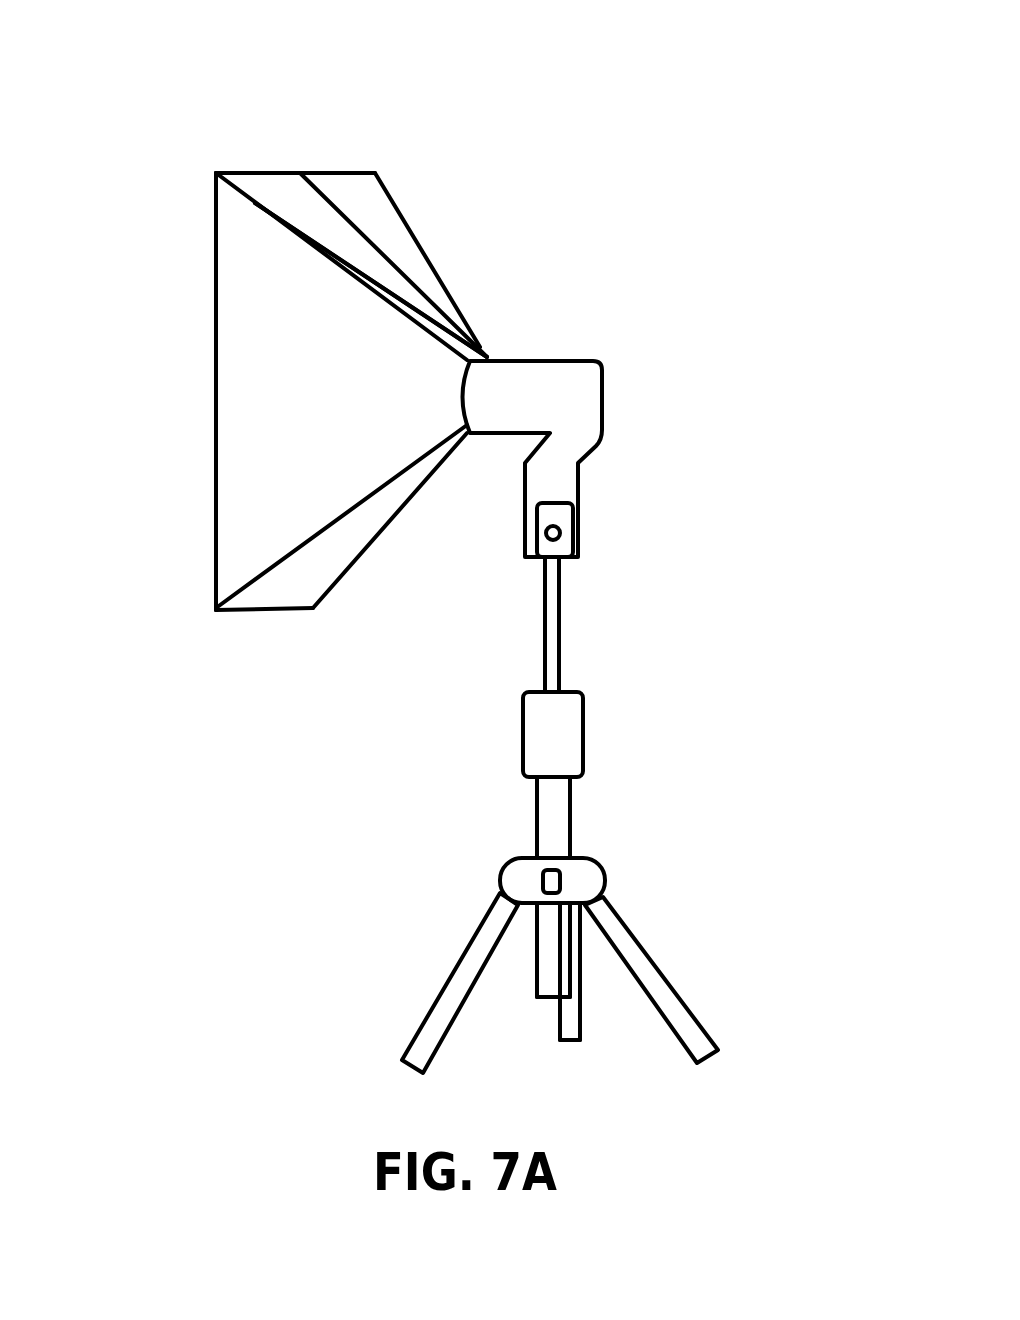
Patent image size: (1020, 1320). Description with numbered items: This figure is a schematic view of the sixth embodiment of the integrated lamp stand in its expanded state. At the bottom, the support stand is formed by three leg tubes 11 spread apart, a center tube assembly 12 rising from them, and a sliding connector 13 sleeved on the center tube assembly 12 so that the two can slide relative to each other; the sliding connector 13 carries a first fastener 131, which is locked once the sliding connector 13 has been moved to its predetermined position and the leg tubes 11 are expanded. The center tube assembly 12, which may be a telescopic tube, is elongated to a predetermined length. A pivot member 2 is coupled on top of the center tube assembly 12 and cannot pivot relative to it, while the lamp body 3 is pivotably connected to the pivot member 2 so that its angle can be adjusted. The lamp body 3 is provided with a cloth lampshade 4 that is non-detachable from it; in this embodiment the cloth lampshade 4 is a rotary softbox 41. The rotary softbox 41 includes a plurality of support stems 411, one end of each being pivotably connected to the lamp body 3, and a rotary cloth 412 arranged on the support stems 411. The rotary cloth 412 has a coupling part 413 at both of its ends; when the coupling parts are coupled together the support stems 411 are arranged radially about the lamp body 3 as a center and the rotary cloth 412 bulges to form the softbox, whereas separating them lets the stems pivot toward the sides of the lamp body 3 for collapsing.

The cloth lampshade 4 is at (238, 655).
The rotary softbox 41 is at (168, 142).
The support stems 411 is at (255, 203).
The rotary cloth 412 is at (216, 314).
The coupling part 413 is at (397, 273).
The lamp body 3 is at (602, 410).
The pivot member 2 is at (573, 533).
The center tube assembly 12 is at (570, 802).
The sliding connector 13 is at (500, 878).
The first fastener 131 is at (560, 883).
The leg tubes 11 is at (663, 972).